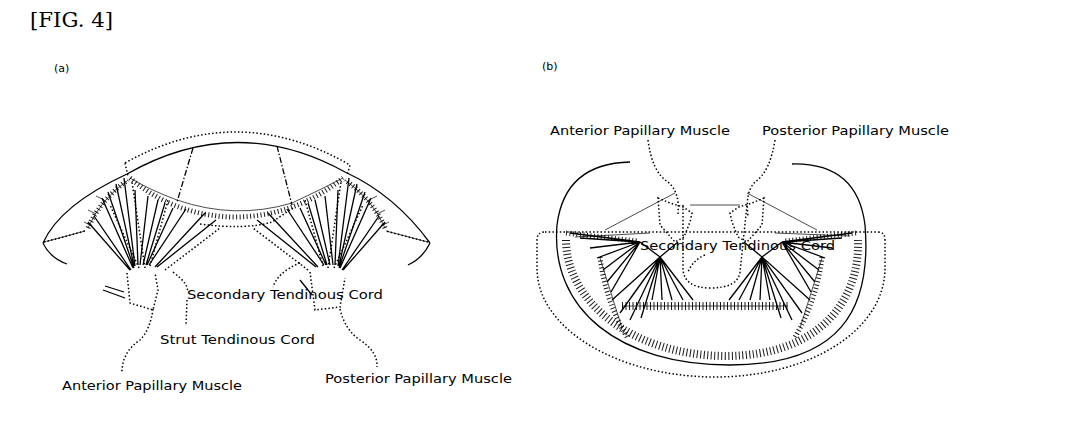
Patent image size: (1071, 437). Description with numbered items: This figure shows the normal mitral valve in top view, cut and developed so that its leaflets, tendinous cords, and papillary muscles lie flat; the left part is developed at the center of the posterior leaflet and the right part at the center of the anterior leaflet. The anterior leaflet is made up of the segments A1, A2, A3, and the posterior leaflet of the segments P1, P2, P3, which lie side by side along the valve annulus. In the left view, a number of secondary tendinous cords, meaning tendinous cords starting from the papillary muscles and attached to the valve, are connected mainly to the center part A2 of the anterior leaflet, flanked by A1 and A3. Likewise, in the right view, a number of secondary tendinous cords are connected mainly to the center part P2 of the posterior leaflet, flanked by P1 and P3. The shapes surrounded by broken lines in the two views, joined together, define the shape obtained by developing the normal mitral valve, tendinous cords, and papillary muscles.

The anterior leaflet segment A1 is at (390, 207).
The center part of the anterior leaflet A2 is at (458, 199).
The anterior leaflet segment A3 is at (571, 207).
The posterior leaflet segment P1 is at (355, 254).
The center part of the posterior leaflet P2 is at (416, 273).
The posterior leaflet segment P3 is at (597, 254).